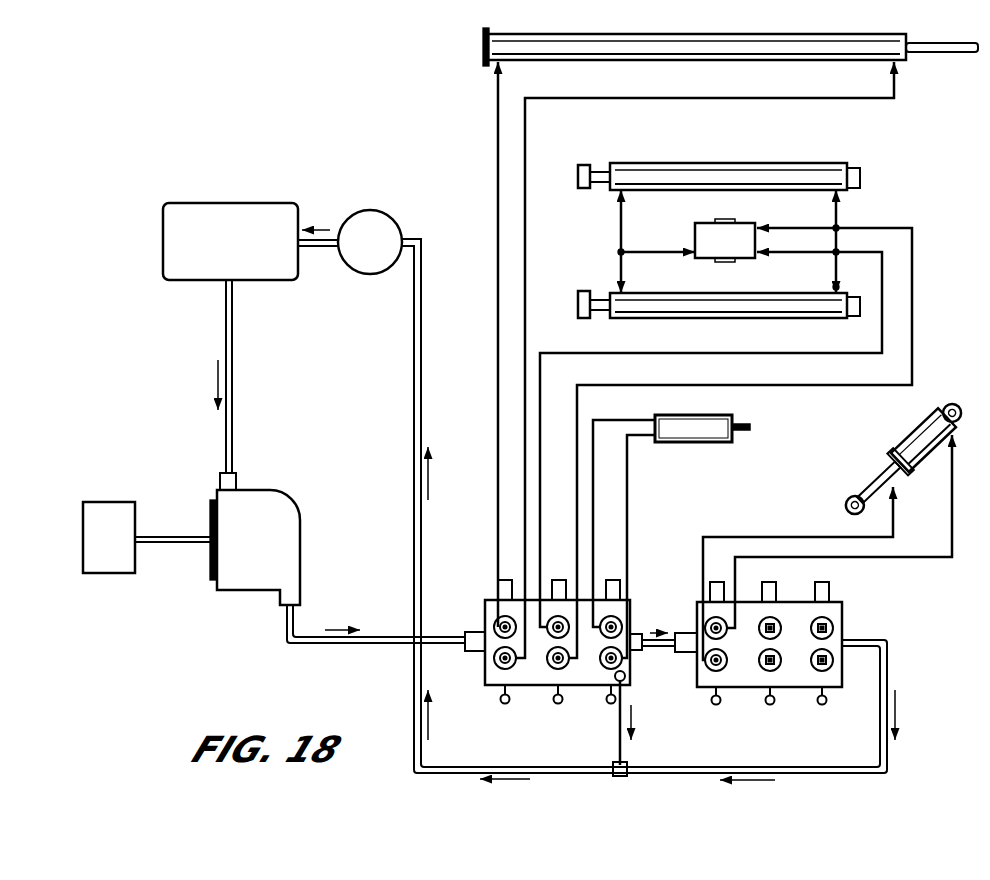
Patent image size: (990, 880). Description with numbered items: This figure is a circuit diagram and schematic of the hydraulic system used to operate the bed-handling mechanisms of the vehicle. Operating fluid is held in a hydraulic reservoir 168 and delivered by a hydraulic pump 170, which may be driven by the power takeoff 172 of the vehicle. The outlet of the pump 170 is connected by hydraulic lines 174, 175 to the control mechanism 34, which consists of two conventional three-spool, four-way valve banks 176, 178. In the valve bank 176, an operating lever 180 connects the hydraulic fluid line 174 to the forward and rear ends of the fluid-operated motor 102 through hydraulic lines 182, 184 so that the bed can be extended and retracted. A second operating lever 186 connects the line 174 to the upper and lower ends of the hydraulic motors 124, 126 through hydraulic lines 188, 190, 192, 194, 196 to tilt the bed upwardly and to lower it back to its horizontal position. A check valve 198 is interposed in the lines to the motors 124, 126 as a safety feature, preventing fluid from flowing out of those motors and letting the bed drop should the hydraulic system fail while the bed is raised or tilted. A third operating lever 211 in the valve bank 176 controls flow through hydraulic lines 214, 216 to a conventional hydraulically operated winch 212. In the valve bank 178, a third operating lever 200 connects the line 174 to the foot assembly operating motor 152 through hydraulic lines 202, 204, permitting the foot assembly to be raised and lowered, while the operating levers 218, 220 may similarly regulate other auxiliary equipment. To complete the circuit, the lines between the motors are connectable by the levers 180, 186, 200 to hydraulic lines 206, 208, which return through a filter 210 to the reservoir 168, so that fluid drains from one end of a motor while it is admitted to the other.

The fluid-operated motor 102 is at (634, 34).
The hydraulic line 182 is at (497, 270).
The hydraulic line 184 is at (525, 276).
The hydraulic motor 126 is at (684, 163).
The hydraulic motor 124 is at (684, 293).
The hydraulic line 192 is at (621, 265).
The hydraulic line 196 is at (836, 246).
The check valve 198 is at (695, 226).
The hydraulic line 190 is at (672, 250).
The hydraulic line 194 is at (893, 228).
The hydraulic line 188 is at (880, 256).
The hydraulic reservoir 168 is at (170, 203).
The filter 210 is at (375, 210).
The hydraulic pump 170 is at (282, 490).
The power takeoff 172 is at (118, 502).
The hydraulic line 174 is at (392, 637).
The hydraulic line 208 is at (414, 535).
The valve bank 176 is at (485, 600).
The operating lever 180 is at (500, 700).
The second operating lever 186 is at (553, 700).
The third operating lever 211 is at (606, 700).
The hydraulic line 206 is at (626, 748).
The hydraulic line 175 is at (675, 652).
The valve bank 178 is at (840, 608).
The third operating lever 200 is at (711, 700).
The operating lever 218 is at (765, 700).
The operating lever 220 is at (817, 700).
The winch 212 is at (700, 415).
The hydraulic line 214 is at (594, 500).
The hydraulic line 216 is at (628, 500).
The control mechanism 34 is at (692, 578).
The fluid-operated motor 152 is at (910, 430).
The hydraulic line 202 is at (803, 537).
The hydraulic line 204 is at (937, 557).